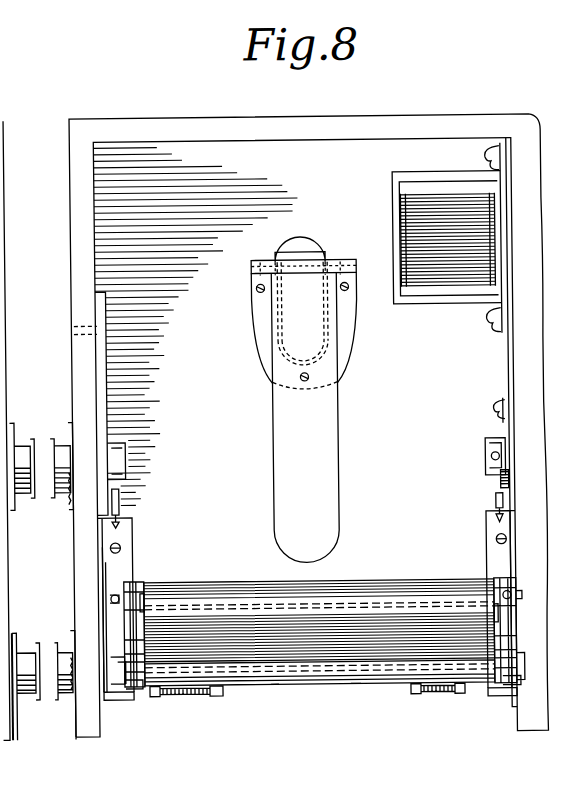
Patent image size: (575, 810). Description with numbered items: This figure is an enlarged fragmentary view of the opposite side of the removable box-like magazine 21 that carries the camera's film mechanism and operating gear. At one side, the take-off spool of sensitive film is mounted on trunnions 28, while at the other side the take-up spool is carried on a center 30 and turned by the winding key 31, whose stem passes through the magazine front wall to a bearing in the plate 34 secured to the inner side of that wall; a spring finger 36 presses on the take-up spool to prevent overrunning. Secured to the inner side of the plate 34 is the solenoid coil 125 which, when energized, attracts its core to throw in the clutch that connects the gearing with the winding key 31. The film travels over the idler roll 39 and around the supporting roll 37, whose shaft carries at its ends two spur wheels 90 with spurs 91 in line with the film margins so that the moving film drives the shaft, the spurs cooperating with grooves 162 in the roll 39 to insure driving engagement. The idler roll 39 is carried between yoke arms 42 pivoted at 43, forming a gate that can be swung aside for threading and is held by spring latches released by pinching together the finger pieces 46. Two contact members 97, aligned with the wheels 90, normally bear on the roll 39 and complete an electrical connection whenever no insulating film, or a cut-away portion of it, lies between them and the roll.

The magazine 21 is at (390, 118).
The solenoid coil 125 is at (405, 207).
The spring finger 36 is at (349, 385).
The plate 34 is at (506, 352).
The center 30 is at (128, 458).
The winding key 31 is at (486, 475).
The contact members 97 is at (132, 537).
The pivot 43 is at (101, 561).
The spur wheels 90 is at (128, 578).
The spurs 91 is at (142, 601).
The supporting roll 37 is at (340, 581).
The trunnions 28 is at (36, 695).
The yoke arms 42 is at (108, 698).
The grooves 162 is at (150, 690).
The idler roll 39 is at (272, 686).
The finger pieces 46 is at (352, 683).